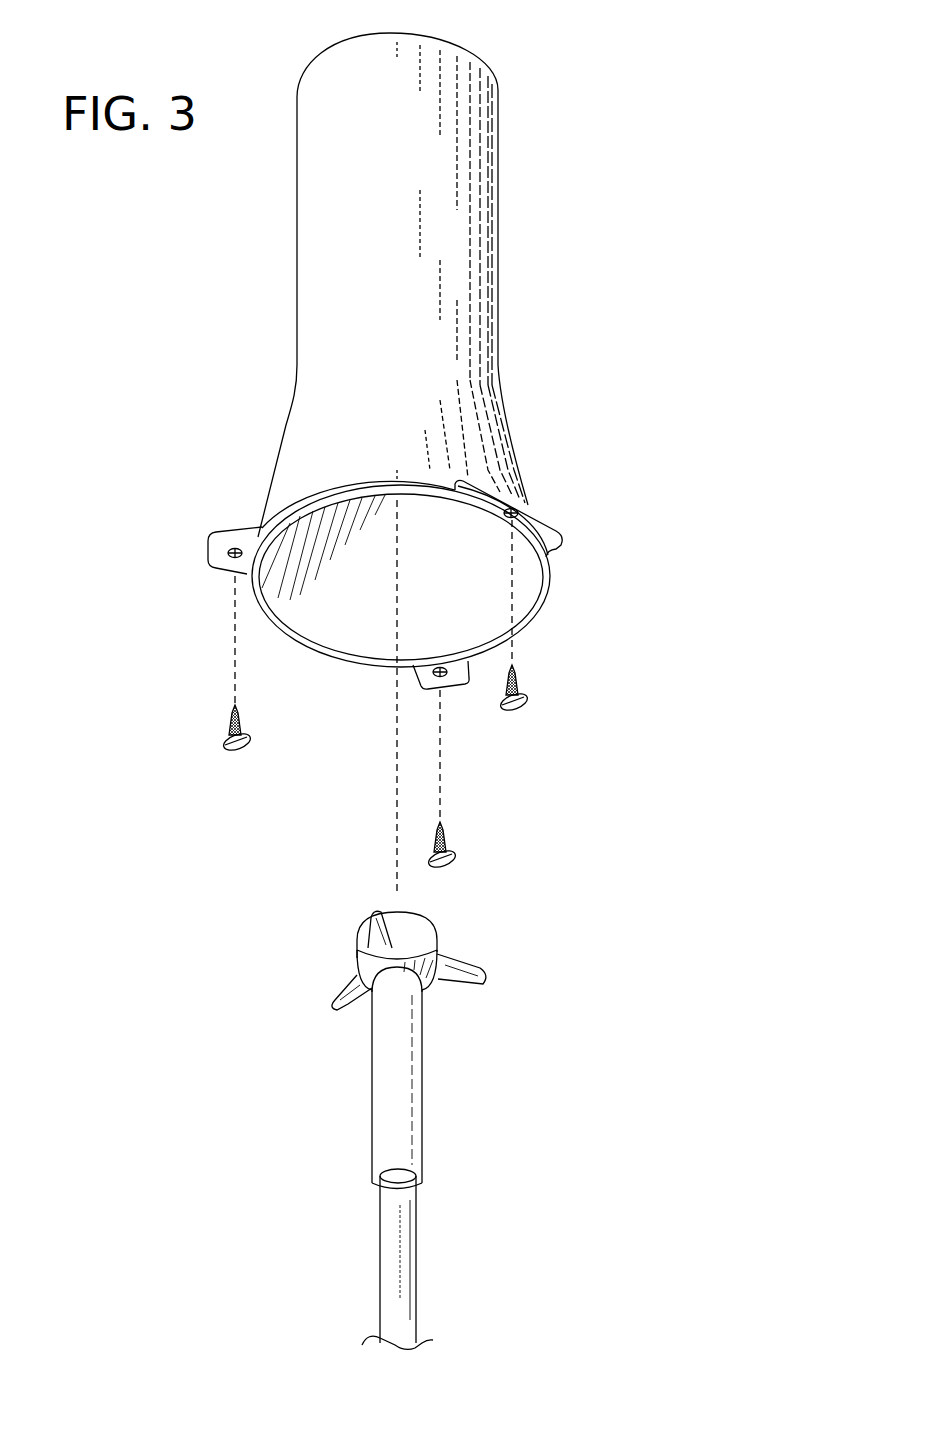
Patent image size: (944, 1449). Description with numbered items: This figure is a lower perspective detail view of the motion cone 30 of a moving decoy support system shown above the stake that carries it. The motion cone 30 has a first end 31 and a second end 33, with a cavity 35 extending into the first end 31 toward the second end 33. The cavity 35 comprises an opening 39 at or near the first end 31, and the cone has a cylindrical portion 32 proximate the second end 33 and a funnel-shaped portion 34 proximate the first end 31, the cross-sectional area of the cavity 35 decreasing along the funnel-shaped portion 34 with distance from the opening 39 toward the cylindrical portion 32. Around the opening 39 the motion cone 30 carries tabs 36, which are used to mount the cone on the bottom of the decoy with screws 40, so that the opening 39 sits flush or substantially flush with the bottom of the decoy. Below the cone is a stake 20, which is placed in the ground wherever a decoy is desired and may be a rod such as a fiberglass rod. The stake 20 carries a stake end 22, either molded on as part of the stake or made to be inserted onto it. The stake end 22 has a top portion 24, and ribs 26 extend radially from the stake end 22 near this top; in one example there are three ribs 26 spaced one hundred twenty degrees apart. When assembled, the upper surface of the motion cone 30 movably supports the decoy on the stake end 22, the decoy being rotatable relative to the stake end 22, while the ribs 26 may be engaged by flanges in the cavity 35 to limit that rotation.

The stake 20 is at (416, 1283).
The stake end 22 is at (449, 1056).
The coupler cap 24 is at (433, 930).
The rib 26 is at (372, 923).
The motion cone 30 is at (523, 38).
The first end 31 is at (252, 529).
The cylindrical portion 32 is at (500, 200).
The second end 33 is at (499, 80).
The funnel-shaped portion 34 is at (283, 440).
The cavity 35 is at (470, 547).
The tab 36 is at (545, 515).
The opening 39 is at (310, 651).
The screw 40 is at (227, 722).